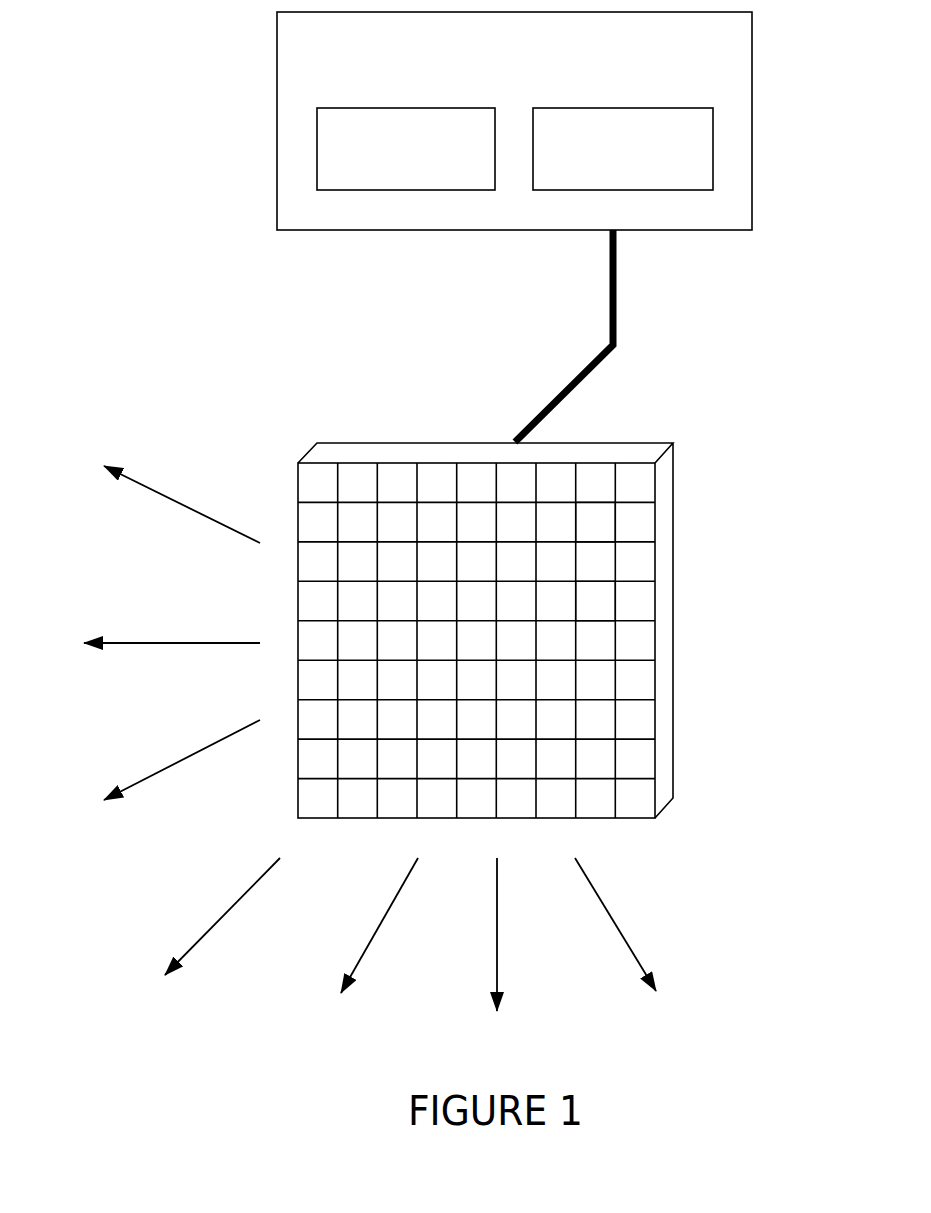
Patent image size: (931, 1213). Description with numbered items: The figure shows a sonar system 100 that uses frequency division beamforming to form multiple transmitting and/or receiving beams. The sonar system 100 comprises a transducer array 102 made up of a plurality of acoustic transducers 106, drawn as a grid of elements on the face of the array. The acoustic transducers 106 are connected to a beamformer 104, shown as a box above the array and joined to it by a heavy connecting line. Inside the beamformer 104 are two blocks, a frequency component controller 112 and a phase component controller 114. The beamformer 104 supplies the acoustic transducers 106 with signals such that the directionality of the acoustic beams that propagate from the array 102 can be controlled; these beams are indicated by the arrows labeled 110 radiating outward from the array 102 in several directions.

The sonar system 100 is at (116, 190).
The transducer array 102 is at (698, 640).
The beamformer 104 is at (277, 130).
The acoustic transducers 106 is at (595, 602).
The ultrasonic beams 110 is at (497, 948).
The frequency component controller 112 is at (385, 108).
The phase component controller 114 is at (602, 108).